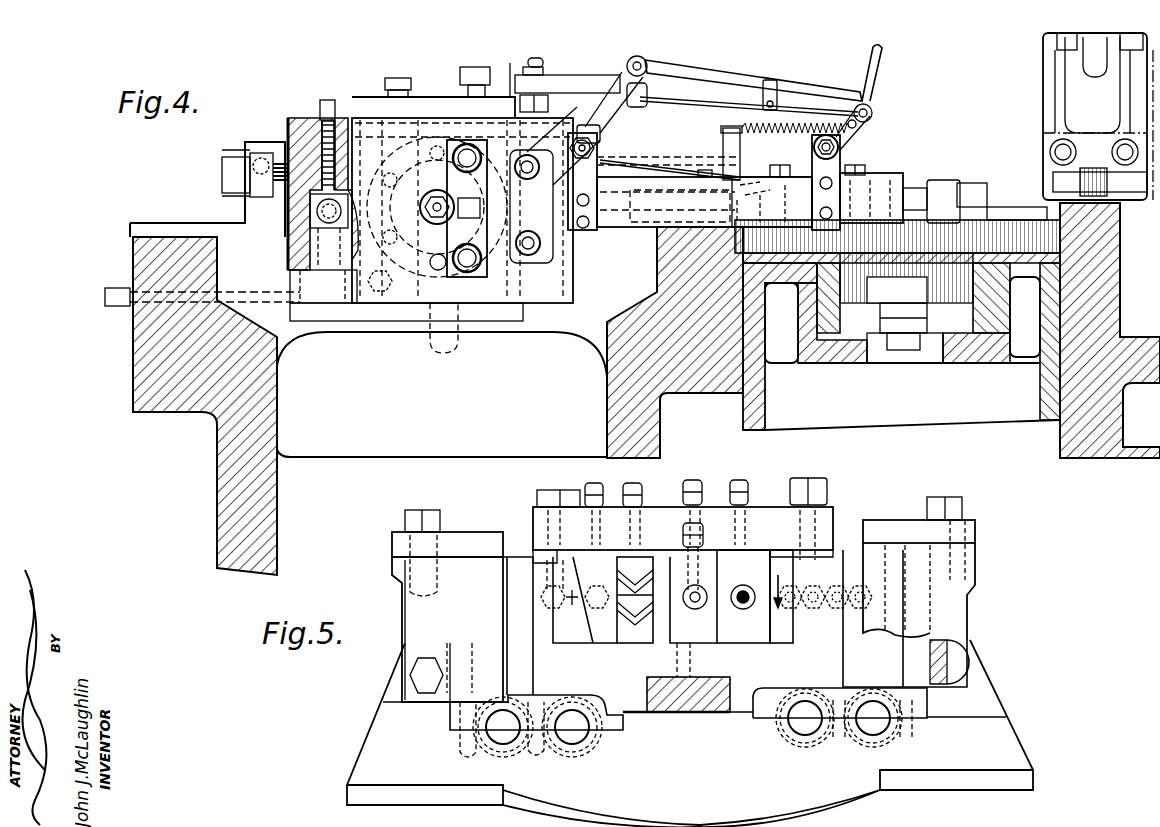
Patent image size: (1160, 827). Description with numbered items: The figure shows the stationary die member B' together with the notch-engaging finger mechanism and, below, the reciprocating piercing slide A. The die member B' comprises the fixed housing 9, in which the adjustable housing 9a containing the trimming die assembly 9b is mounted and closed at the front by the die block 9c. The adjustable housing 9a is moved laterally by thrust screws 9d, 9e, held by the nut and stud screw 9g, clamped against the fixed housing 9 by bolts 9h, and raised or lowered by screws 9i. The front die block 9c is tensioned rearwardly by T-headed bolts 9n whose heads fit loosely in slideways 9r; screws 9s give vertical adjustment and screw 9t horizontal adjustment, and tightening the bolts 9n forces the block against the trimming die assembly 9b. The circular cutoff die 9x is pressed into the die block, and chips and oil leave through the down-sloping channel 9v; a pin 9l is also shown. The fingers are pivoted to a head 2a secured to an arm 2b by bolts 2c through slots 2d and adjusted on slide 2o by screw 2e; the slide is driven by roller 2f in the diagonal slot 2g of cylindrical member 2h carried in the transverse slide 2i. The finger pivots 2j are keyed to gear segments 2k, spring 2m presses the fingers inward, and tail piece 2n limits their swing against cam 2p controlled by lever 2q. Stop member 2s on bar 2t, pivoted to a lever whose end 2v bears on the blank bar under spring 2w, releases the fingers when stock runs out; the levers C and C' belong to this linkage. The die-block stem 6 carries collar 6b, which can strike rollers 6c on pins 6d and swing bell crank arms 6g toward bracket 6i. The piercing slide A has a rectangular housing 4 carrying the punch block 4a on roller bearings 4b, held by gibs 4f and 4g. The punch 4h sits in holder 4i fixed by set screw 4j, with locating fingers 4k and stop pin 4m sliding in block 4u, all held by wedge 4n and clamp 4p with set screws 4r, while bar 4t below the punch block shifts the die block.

In FIG. 4, the fixed housing 9 is at (250, 208).
In FIG. 5, the fixed housing 9 is at (669, 595).
In FIG. 4, the adjustable housing 9a is at (288, 132).
In FIG. 4, the trimming die assembly 9b is at (385, 178).
In FIG. 4, the front die block 9c is at (358, 118).
In FIG. 4, the thrust screw 9d is at (222, 182).
In FIG. 4, the thrust screw 9e is at (105, 302).
In FIG. 4, the nut and stud screw 9g is at (545, 72).
In FIG. 4, the clamping bolts 9h is at (452, 140).
In FIG. 4, the adjusting screws 9i is at (398, 78).
In FIG. 4, the pin 9l is at (504, 72).
In FIG. 4, the T-headed bolts 9n is at (329, 229).
In FIG. 4, the slideways 9r is at (288, 252).
In FIG. 4, the vertical adjusting screws 9s is at (327, 100).
In FIG. 4, the horizontal adjusting screw 9t is at (236, 158).
In FIG. 4, the discharge channel 9v is at (458, 345).
In FIG. 4, the cutoff die 9x is at (439, 270).
In FIG. 4, the stationary die member B' is at (286, 92).
In FIG. 4, the head 2a is at (553, 250).
In FIG. 4, the arm 2b is at (642, 228).
In FIG. 4, the bolts 2c is at (775, 168).
In FIG. 4, the slots 2d is at (896, 185).
In FIG. 4, the adjusting screw 2e is at (970, 185).
In FIG. 4, the anti-friction roller 2f is at (896, 265).
In FIG. 4, the diagonal slot 2g is at (936, 262).
In FIG. 4, the cylindrical member 2h is at (1004, 300).
In FIG. 4, the transversely reciprocating slide 2i is at (1005, 348).
In FIG. 4, the pivots 2j is at (583, 137).
In FIG. 4, the gear segments 2k is at (555, 228).
In FIG. 4, the spring 2m is at (700, 172).
In FIG. 4, the tail piece 2n is at (670, 167).
In FIG. 4, the slide 2o is at (998, 222).
In FIG. 4, the cam 2p is at (620, 153).
In FIG. 4, the lever 2q is at (632, 114).
In FIG. 4, the adjustable stop member 2s is at (645, 103).
In FIG. 4, the bar 2t is at (720, 103).
In FIG. 4, the lever end 2v is at (707, 80).
In FIG. 4, the spring 2w is at (866, 122).
In FIG. 4, the lever C is at (756, 65).
In FIG. 4, the adjusting member C' is at (943, 158).
In FIG. 4, the stem 6 is at (1126, 196).
In FIG. 4, the collar 6b is at (1108, 230).
In FIG. 4, the anti-friction rollers 6c is at (1066, 150).
In FIG. 4, the pins 6d is at (1118, 152).
In FIG. 4, the bell crank arms 6g is at (1112, 88).
In FIG. 4, the bracket 6i is at (1075, 106).
In FIG. 5, the rectangular housing 4 is at (398, 598).
In FIG. 5, the punch block 4a is at (522, 632).
In FIG. 5, the roller bearings 4b is at (565, 752).
In FIG. 5, the gibs 4f is at (464, 538).
In FIG. 5, the gibs 4g is at (410, 622).
In FIG. 5, the piercing punch 4h is at (696, 605).
In FIG. 5, the punch holder 4i is at (678, 648).
In FIG. 5, the set screw 4j is at (708, 531).
In FIG. 5, the centering or locating fingers 4k is at (618, 568).
In FIG. 5, the automatic stop pin 4m is at (744, 606).
In FIG. 5, the wedge 4n is at (596, 625).
In FIG. 5, the clamp 4p is at (766, 507).
In FIG. 5, the set screws 4r is at (628, 474).
In FIG. 5, the bar 4t is at (662, 712).
In FIG. 5, the block 4u is at (752, 560).
In FIG. 5, the piercing slide A is at (1020, 712).